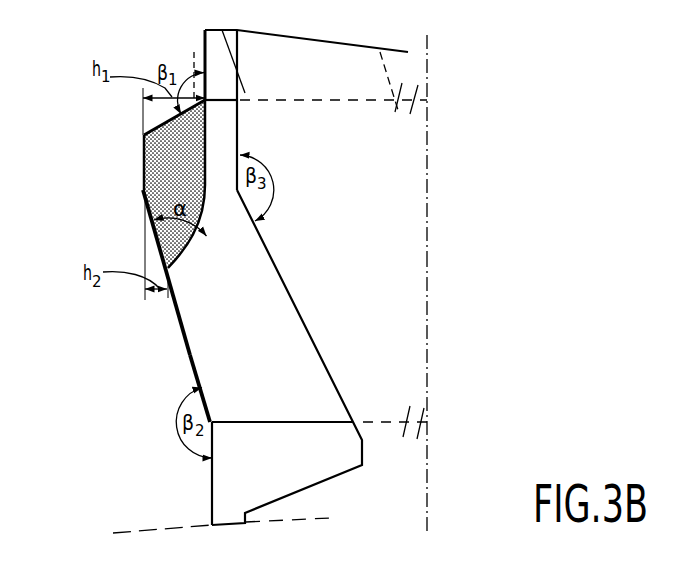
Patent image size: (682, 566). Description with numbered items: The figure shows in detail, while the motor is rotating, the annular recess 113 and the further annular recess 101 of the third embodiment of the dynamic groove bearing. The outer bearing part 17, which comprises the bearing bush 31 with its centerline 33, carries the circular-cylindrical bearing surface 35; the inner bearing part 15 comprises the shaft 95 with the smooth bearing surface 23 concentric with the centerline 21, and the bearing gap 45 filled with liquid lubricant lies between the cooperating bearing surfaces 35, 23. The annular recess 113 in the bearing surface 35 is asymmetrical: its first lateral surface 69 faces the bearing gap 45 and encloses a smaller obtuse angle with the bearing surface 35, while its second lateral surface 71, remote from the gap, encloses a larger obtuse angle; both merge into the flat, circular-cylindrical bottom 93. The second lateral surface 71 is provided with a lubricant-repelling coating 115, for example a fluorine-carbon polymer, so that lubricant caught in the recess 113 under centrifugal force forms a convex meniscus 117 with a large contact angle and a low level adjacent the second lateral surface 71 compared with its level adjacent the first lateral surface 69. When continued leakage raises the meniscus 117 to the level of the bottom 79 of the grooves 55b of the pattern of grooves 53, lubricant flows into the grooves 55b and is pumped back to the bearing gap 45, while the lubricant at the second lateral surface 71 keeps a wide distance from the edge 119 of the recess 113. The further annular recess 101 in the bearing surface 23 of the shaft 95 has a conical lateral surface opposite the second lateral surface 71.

The outer bearing part 17 is at (127, 134).
The bearing bush 31 is at (140, 33).
The bearing surface 35 is at (200, 33).
The bearing gap 45 is at (217, 58).
The pattern of grooves 53 is at (306, 30).
The grooves 55b is at (238, 32).
The inner bearing part 15 is at (441, 139).
The shaft 95 is at (398, 62).
The bottom of the grooves 79 is at (194, 58).
The first lateral surface 69 is at (162, 123).
The bottom 93 is at (143, 165).
The bearing surface 23 is at (238, 125).
The convex meniscus 117 is at (172, 266).
The centerline 21 is at (468, 388).
The centerline 33 is at (429, 253).
The annular recess 113 is at (158, 297).
The lubricant-repelling coating 115 is at (192, 348).
The further annular recess 101 is at (350, 366).
The second lateral surface 71 is at (190, 368).
The edge 119 is at (215, 421).